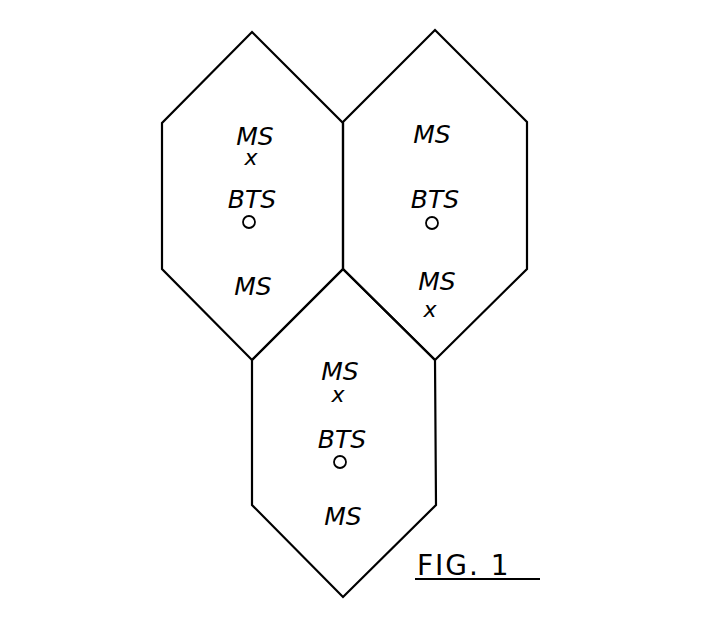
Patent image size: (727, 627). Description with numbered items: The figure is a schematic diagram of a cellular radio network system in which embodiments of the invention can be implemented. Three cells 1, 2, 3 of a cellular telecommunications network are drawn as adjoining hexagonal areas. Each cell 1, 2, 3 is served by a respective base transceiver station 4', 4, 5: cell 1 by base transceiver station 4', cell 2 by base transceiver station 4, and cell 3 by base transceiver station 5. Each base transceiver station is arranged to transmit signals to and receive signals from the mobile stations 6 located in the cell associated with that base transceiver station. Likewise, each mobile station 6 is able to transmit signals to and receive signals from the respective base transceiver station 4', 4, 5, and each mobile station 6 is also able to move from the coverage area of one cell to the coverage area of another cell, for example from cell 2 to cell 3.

The cell 1 is at (352, 343).
The cell 2 is at (268, 113).
The cell 3 is at (443, 115).
The base transceiver station 4 is at (170, 138).
The base transceiver station 4' is at (215, 464).
The base transceiver station 5 is at (438, 223).
The mobile station 6 is at (440, 158).